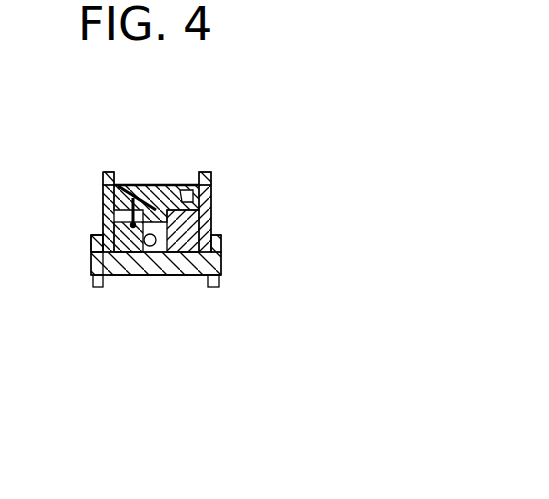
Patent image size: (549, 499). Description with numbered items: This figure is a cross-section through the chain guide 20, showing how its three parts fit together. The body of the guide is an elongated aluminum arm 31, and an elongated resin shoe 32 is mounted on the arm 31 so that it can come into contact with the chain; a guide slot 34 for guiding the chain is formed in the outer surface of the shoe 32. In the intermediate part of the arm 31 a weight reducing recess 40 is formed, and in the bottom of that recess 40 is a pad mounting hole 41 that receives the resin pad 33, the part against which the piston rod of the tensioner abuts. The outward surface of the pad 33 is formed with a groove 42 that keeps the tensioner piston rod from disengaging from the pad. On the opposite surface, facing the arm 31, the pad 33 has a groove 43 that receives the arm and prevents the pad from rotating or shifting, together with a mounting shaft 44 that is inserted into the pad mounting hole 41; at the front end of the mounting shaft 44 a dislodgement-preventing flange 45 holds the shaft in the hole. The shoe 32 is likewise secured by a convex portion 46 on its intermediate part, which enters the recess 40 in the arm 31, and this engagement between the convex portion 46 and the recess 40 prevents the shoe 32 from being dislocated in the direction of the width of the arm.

The chain guide 20 is at (236, 174).
The arm 31 is at (213, 217).
The shoe 32 is at (213, 184).
The pad 33 is at (222, 265).
The guide slot 34 is at (147, 184).
The weight reducing recess 40 is at (108, 233).
The pad mounting hole 41 is at (137, 279).
The groove 42 is at (115, 280).
The groove 43 is at (94, 278).
The mounting shaft 44 is at (177, 279).
The dislodgement-preventing flange 45 is at (175, 184).
The convex portion 46 is at (131, 224).